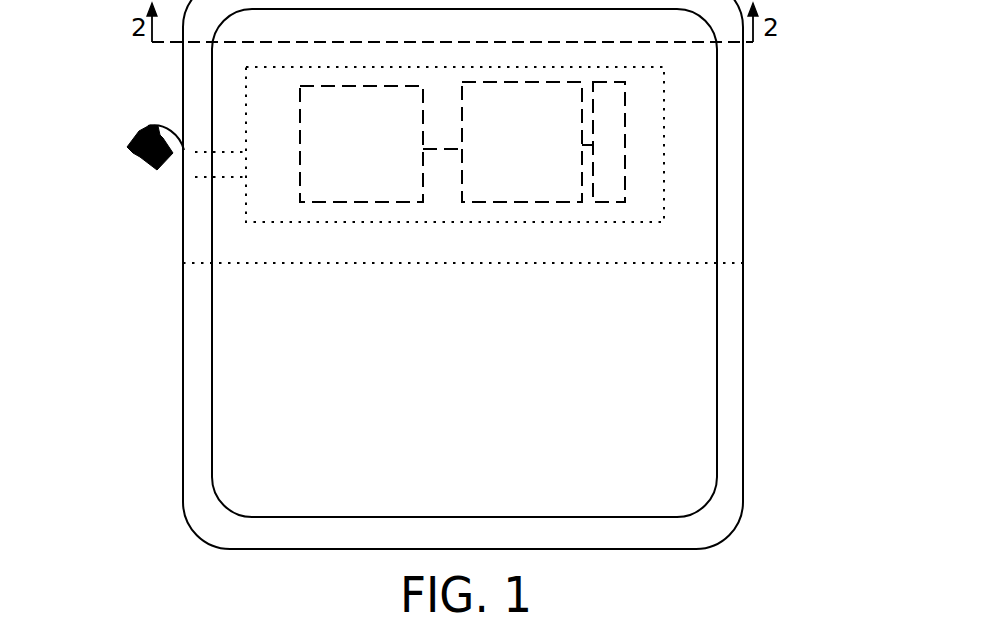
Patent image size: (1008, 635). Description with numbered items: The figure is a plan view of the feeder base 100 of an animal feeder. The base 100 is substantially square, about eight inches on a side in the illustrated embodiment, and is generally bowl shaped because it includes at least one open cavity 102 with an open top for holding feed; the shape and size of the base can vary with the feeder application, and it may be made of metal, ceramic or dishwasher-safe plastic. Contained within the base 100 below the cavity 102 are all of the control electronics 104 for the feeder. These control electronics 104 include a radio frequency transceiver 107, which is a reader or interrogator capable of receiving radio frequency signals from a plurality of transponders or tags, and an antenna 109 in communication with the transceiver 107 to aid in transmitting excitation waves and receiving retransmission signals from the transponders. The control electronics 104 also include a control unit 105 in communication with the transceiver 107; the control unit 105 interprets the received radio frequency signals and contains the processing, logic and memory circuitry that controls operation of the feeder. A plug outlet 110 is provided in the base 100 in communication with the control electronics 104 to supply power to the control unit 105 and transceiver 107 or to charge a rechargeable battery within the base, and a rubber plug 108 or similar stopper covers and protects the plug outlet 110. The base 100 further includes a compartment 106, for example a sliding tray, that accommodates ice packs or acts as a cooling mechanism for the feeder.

The feeder base 100 is at (183, 335).
The open cavity 102 is at (688, 57).
The control electronics 104 is at (664, 192).
The control unit 105 is at (338, 203).
The compartment 106 is at (630, 263).
The radio frequency transceiver 107 is at (500, 203).
The rubber plug 108 is at (138, 152).
The antenna 109 is at (598, 200).
The plug outlet 110 is at (198, 162).